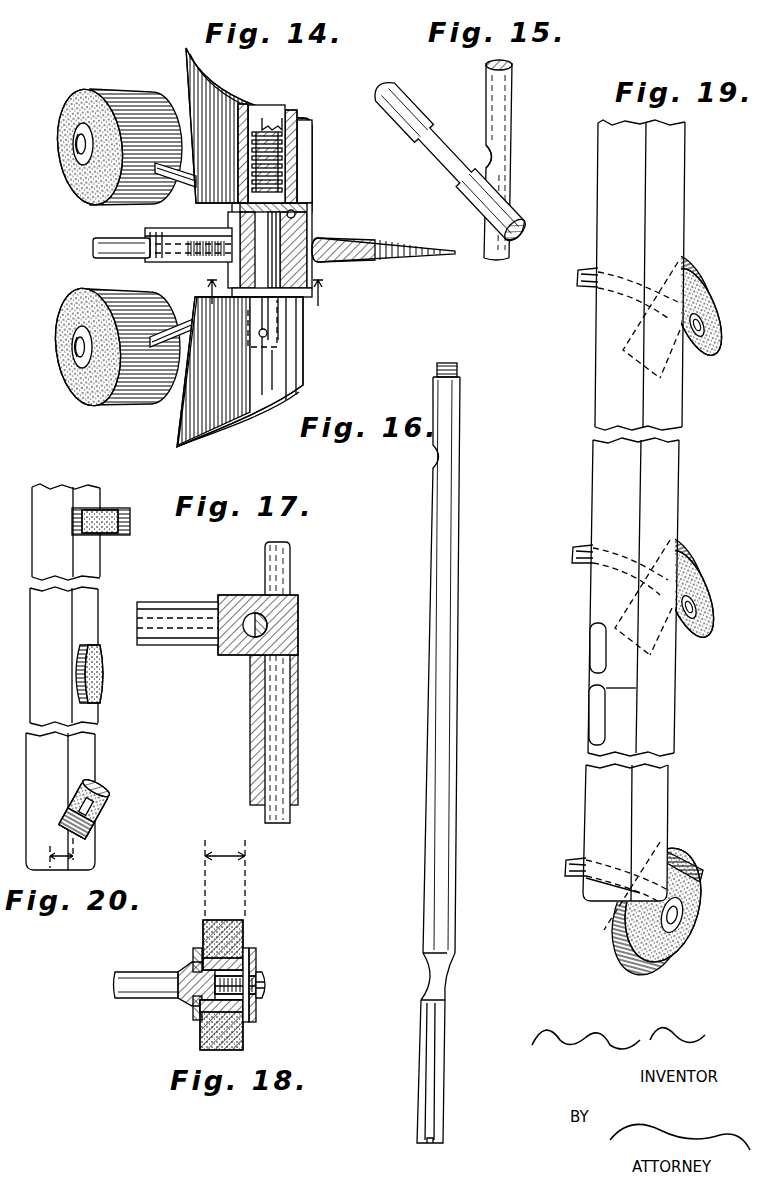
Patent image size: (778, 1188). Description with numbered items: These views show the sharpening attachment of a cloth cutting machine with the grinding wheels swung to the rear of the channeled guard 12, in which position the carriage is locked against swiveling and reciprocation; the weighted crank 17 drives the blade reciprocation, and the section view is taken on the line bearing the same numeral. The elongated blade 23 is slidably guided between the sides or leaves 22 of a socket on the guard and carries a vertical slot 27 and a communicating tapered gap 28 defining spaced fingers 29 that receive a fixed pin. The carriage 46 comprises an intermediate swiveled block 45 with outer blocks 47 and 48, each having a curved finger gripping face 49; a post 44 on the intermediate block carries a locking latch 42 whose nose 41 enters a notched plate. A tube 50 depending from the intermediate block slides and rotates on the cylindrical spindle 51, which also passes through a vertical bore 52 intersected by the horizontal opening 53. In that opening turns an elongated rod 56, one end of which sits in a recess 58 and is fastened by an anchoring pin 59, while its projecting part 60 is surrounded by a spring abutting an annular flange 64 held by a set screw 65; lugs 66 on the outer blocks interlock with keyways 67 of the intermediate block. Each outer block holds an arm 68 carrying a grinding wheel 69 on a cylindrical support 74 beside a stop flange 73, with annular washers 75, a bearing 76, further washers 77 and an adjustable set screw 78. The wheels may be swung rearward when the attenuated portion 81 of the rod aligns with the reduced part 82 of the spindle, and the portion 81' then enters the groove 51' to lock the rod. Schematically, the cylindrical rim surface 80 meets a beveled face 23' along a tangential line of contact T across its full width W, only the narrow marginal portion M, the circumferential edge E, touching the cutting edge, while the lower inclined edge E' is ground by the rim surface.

In FIG. 14, the channeled guard 12 is at (355, 248).
In FIG. 14, the weighted crank 17 is at (263, 293).
In FIG. 14, the sides or leaves 22 is at (404, 238).
In FIG. 14, the elongated blade 23 is at (432, 241).
In FIG. 19, the elongated blade 23 is at (654, 510).
In FIG. 20, the elongated blade 23 is at (83, 677).
In FIG. 20, the beveled face 23' is at (115, 655).
In FIG. 19, the vertical slot 27 is at (608, 688).
In FIG. 19, the tapered gap 28 is at (590, 682).
In FIG. 19, the spaced fingers 29 is at (588, 720).
In FIG. 14, the nose or head 41 is at (148, 250).
In FIG. 14, the locking latch 42 is at (95, 240).
In FIG. 14, the post 44 is at (175, 229).
In FIG. 17, the post 44 is at (175, 645).
In FIG. 14, the intermediate swiveled block 45 is at (335, 229).
In FIG. 17, the intermediate swiveled block 45 is at (218, 656).
In FIG. 14, the carriage 46 is at (188, 100).
In FIG. 14, the outer block 47 is at (216, 97).
In FIG. 14, the outer block 48 is at (250, 392).
In FIG. 14, the curved finger gripping face 49 is at (266, 118).
In FIG. 14, the tube 50 is at (315, 283).
In FIG. 17, the tube 50 is at (262, 736).
In FIG. 14, the spindle 51 is at (314, 245).
In FIG. 15, the spindle 51 is at (514, 160).
In FIG. 17, the spindle 51 is at (299, 682).
In FIG. 16, the spindle 51 is at (422, 753).
In FIG. 15, the groove 51' is at (521, 154).
In FIG. 16, the groove 51' is at (414, 480).
In FIG. 14, the vertical bore 52 is at (302, 213).
In FIG. 14, the horizontal opening 53 is at (243, 228).
In FIG. 15, the elongated rod 56 is at (490, 200).
In FIG. 17, the elongated rod 56 is at (258, 612).
In FIG. 14, the recess or bore 58 is at (260, 338).
In FIG. 14, the anchoring pin 59 is at (265, 335).
In FIG. 15, the projecting part 60 is at (418, 126).
In FIG. 14, the annular flange 64 is at (298, 121).
In FIG. 14, the set screw 65 is at (283, 122).
In FIG. 14, the lug or key 66 is at (310, 210).
In FIG. 14, the keyways or slots 67 is at (296, 214).
In FIG. 14, the arm 68 is at (180, 165).
In FIG. 18, the arm 68 is at (130, 971).
In FIG. 14, the grinding wheel 69 is at (99, 91).
In FIG. 19, the grinding wheel 69 is at (710, 278).
In FIG. 20, the grinding wheel 69 is at (100, 797).
In FIG. 18, the grinding wheel 69 is at (224, 930).
In FIG. 18, the stop flange 73 is at (192, 960).
In FIG. 18, the cylindrical support 74 is at (186, 992).
In FIG. 18, the annular washers 75 is at (195, 1017).
In FIG. 18, the bearing 76 is at (247, 952).
In FIG. 14, the annular washers 77 is at (78, 153).
In FIG. 18, the annular washers 77 is at (256, 962).
In FIG. 14, the adjustable set screw 78 is at (80, 142).
In FIG. 18, the adjustable set screw 78 is at (271, 987).
In FIG. 14, the cylindrical rim surface 80 is at (130, 105).
In FIG. 19, the cylindrical rim surface 80 is at (628, 945).
In FIG. 20, the cylindrical rim surface 80 is at (70, 806).
In FIG. 18, the cylindrical rim surface 80 is at (214, 920).
In FIG. 14, the attenuated portion 81 is at (46, 262).
In FIG. 15, the attenuated portion 81 is at (416, 165).
In FIG. 18, the attenuated portion 81 is at (274, 926).
In FIG. 14, the portion 81' is at (250, 295).
In FIG. 15, the portion 81' is at (458, 135).
In FIG. 17, the portion 81' is at (294, 616).
In FIG. 16, the reduced part 82 is at (440, 976).
In FIG. 19, the circumferential edge E is at (706, 612).
In FIG. 20, the circumferential edge E is at (131, 810).
In FIG. 18, the circumferential edge E is at (276, 902).
In FIG. 19, the lower inclined edge E' is at (598, 909).
In FIG. 19, the marginal portion M is at (698, 280).
In FIG. 20, the tangential line of contact T is at (100, 829).
In FIG. 20, the full width W is at (61, 853).
In FIG. 18, the full width W is at (225, 880).